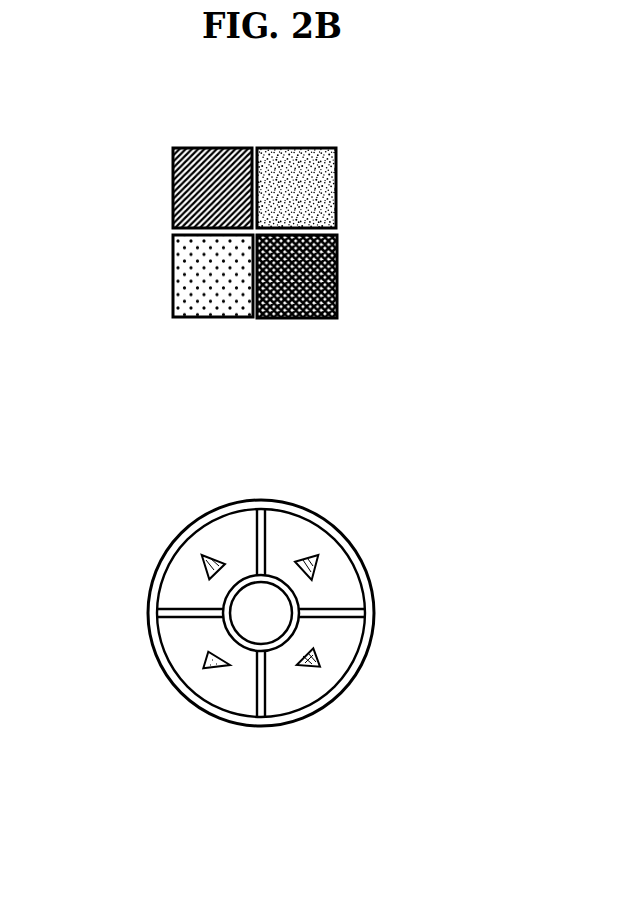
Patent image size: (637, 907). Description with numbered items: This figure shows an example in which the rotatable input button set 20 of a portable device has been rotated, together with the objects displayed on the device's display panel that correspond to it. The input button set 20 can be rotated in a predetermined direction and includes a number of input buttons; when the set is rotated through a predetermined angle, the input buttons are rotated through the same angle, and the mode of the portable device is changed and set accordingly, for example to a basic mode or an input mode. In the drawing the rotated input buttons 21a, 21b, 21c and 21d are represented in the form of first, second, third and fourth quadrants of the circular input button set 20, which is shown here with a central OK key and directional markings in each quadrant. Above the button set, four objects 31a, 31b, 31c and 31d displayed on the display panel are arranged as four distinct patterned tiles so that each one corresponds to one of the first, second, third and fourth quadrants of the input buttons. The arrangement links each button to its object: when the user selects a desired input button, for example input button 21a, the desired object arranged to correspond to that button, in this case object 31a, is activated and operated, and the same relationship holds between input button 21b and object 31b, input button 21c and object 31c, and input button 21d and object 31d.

The input button set 20 is at (261, 631).
The rotated input button 21a is at (230, 528).
The rotated input button 21b is at (352, 575).
The rotated input button 21c is at (160, 652).
The rotated input button 21d is at (345, 650).
The object 31a is at (208, 147).
The object 31b is at (292, 147).
The object 31c is at (209, 318).
The object 31d is at (297, 318).